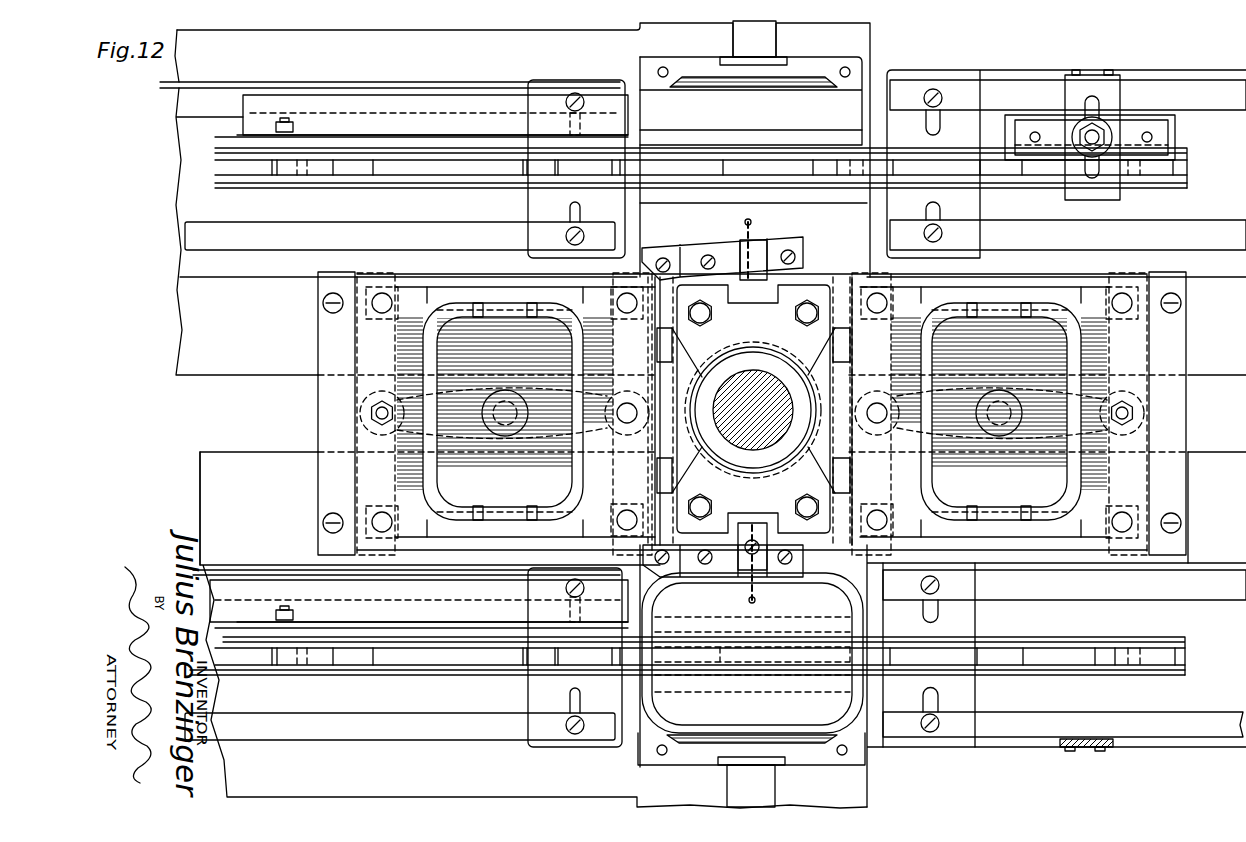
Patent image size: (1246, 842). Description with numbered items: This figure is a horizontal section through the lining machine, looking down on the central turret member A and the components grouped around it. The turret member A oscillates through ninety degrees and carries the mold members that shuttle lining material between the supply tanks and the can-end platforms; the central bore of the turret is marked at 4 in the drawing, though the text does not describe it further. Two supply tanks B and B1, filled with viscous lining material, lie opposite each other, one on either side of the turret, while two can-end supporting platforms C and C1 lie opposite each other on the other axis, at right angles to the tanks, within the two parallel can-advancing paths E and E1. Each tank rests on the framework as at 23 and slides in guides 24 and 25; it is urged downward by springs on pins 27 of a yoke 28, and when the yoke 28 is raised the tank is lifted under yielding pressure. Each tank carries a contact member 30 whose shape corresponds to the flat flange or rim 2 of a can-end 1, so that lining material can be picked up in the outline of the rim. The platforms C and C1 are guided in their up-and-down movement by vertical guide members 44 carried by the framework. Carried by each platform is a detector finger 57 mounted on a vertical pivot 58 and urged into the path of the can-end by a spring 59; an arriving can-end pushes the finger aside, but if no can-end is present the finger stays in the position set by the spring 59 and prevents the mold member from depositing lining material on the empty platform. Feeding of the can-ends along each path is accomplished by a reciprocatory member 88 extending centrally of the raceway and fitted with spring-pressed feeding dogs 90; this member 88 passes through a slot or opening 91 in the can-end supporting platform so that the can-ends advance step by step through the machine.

The can-end 1 is at (812, 590).
The flat flange or rim 2 is at (838, 597).
The hatched core bore 4 is at (730, 383).
The framework 23 is at (714, 508).
The guide 24 is at (325, 330).
The guide 25 is at (753, 410).
The pin 27 is at (376, 414).
The yoke 28 is at (525, 440).
The contact member 30 is at (448, 501).
The vertical guide member 44 is at (757, 44).
The detector finger 57 is at (698, 253).
The vertical pivot 58 is at (664, 258).
The spring 59 is at (752, 234).
The reciprocatory member 88 is at (233, 157).
The spring-pressed feeding dog 90 is at (288, 170).
The slot or opening 91 is at (760, 145).
The turret member A is at (773, 353).
The supply tank B is at (405, 350).
The supply tank B1 is at (1095, 355).
The can-end supporting platform C is at (847, 103).
The can-end supporting platform C1 is at (854, 722).
The can-advancing path E is at (406, 154).
The can-advancing path E1 is at (406, 683).